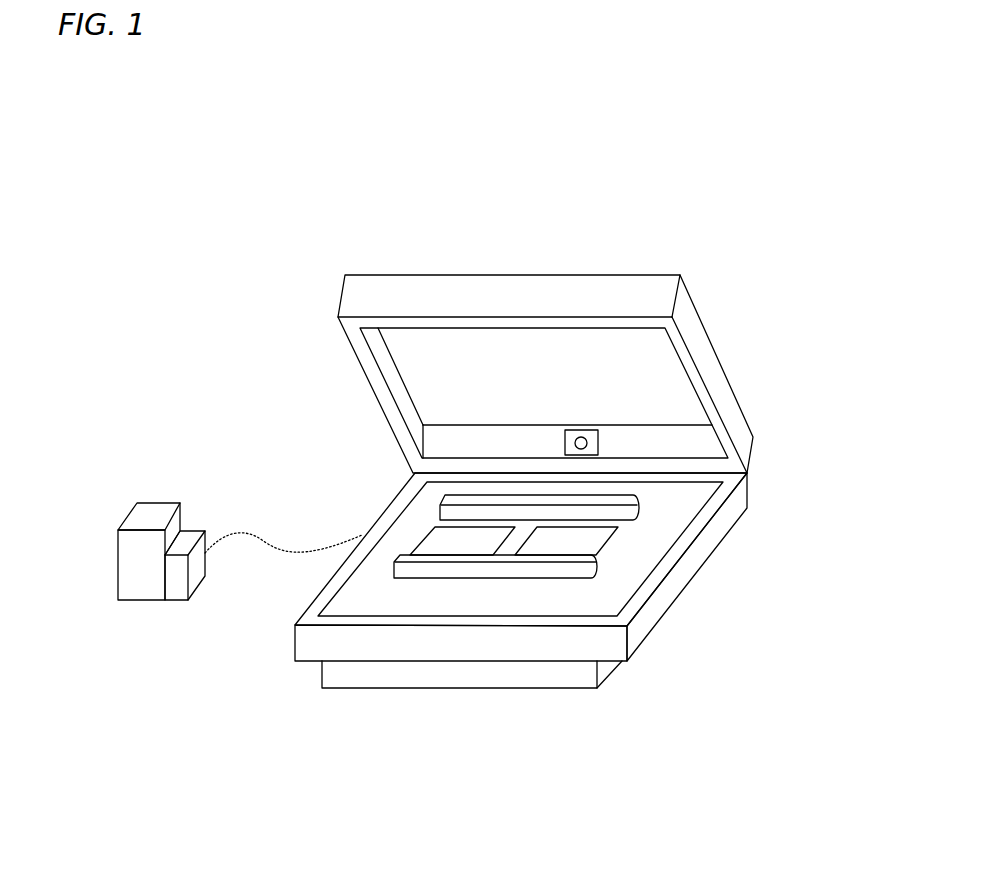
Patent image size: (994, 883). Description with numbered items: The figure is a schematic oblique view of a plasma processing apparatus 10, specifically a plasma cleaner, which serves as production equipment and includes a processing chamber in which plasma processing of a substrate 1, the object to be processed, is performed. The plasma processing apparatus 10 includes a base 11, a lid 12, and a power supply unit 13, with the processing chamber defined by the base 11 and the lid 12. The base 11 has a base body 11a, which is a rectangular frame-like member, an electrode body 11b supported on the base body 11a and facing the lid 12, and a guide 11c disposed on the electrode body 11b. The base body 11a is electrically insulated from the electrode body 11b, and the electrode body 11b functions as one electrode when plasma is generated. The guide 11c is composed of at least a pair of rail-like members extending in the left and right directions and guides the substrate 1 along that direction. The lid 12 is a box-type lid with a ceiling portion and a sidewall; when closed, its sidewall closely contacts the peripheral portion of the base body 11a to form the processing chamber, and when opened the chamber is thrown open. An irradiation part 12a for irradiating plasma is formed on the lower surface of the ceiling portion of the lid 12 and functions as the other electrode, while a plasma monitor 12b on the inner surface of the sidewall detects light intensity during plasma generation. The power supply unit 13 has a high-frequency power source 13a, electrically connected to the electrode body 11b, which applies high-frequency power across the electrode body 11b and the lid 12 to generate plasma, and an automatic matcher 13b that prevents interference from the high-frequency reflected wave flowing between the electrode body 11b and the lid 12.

The substrate 1 is at (548, 545).
The plasma processing apparatus 10 is at (243, 345).
The base 11 is at (650, 638).
The base body 11a is at (560, 675).
The electrode body 11b is at (610, 587).
The guide 11c is at (598, 567).
The lid 12 is at (705, 327).
The irradiation part 12a is at (662, 367).
The plasma monitor 12b is at (602, 442).
The power supply unit 13 is at (157, 502).
The high-frequency power source 13a is at (145, 590).
The automatic matcher 13b is at (177, 590).